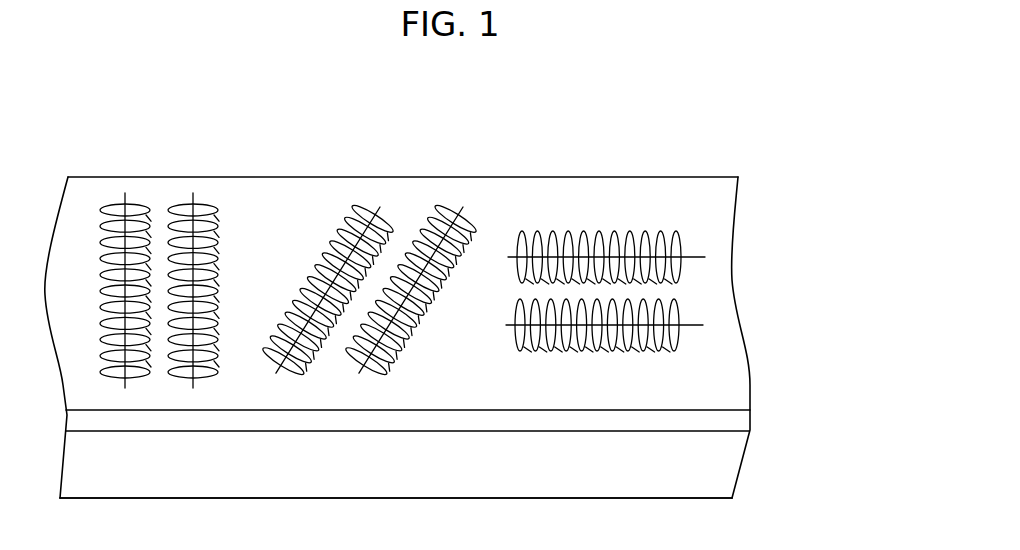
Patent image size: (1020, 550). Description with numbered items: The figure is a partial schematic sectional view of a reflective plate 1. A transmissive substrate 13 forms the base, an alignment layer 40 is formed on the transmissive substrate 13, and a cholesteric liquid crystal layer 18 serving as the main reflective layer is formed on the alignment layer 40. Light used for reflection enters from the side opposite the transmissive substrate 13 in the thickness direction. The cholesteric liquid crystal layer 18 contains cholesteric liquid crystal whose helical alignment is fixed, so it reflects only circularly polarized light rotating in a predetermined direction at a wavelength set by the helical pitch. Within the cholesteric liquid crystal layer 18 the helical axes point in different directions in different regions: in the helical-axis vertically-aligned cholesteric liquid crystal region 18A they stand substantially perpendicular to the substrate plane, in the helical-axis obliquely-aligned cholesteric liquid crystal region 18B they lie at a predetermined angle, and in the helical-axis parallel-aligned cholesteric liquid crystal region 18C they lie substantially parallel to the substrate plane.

The reflective plate 1 is at (733, 158).
The cholesteric liquid crystal layer 18 is at (460, 246).
The helical-axis vertically-aligned cholesteric liquid crystal region 18A is at (92, 153).
The helical-axis obliquely-aligned cholesteric liquid crystal region 18B is at (472, 153).
The helical-axis parallel-aligned cholesteric liquid crystal region 18C is at (700, 153).
The alignment layer 40 is at (768, 418).
The transmissive substrate 13 is at (718, 460).